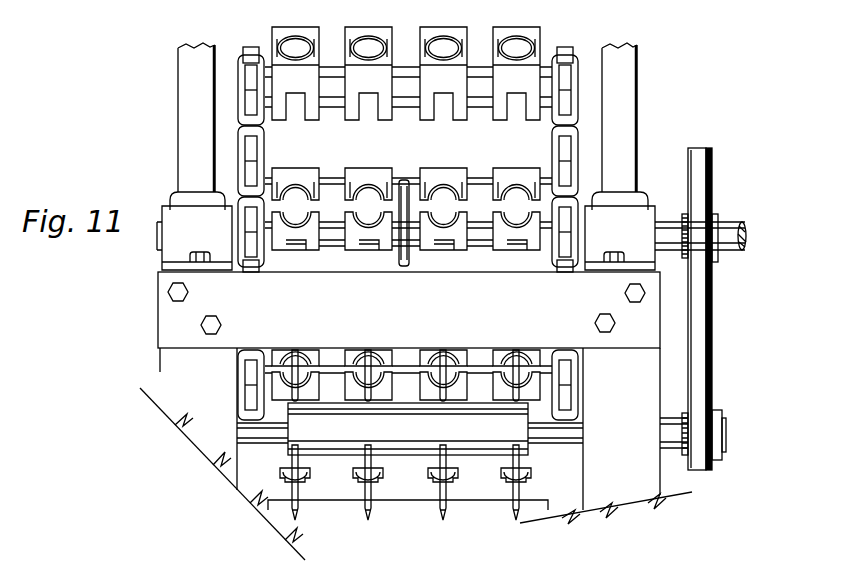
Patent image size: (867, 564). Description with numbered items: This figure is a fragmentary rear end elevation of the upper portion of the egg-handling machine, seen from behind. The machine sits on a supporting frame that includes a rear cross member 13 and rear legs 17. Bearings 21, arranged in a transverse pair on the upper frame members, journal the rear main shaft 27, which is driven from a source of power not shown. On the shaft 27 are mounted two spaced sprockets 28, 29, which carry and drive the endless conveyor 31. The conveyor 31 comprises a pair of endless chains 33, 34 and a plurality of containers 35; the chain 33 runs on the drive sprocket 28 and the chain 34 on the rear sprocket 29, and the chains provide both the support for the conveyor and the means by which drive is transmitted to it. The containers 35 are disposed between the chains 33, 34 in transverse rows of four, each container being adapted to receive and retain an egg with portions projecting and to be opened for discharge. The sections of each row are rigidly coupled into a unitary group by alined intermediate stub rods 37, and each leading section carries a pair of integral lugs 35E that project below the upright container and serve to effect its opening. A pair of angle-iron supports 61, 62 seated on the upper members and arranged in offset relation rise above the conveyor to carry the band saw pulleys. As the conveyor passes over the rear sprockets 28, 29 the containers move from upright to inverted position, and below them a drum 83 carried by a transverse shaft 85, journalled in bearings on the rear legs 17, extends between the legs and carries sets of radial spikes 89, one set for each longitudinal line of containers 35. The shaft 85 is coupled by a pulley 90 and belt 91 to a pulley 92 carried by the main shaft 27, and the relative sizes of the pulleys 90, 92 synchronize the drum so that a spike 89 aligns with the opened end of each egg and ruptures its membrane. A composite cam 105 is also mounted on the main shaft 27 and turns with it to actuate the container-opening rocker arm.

The rear cross member 13 is at (175, 331).
The rear legs 17 is at (170, 373).
The bearings 21 is at (645, 196).
The shaft 27 is at (722, 228).
The sprocket 28 is at (237, 80).
The sprocket 29 is at (575, 47).
The endless conveyor 31 is at (408, 83).
The chain 33 is at (237, 130).
The chain 34 is at (582, 130).
The container 35 is at (406, 84).
The lugs 35E is at (352, 120).
The stub rods 37 is at (478, 180).
The support 61 is at (622, 80).
The support 62 is at (190, 106).
The drum 83 is at (406, 456).
The shaft 85 is at (562, 442).
The spikes 89 is at (520, 511).
The pulley 90 is at (716, 420).
The belt 91 is at (700, 385).
The pulley 92 is at (715, 262).
The composite cam 105 is at (403, 182).